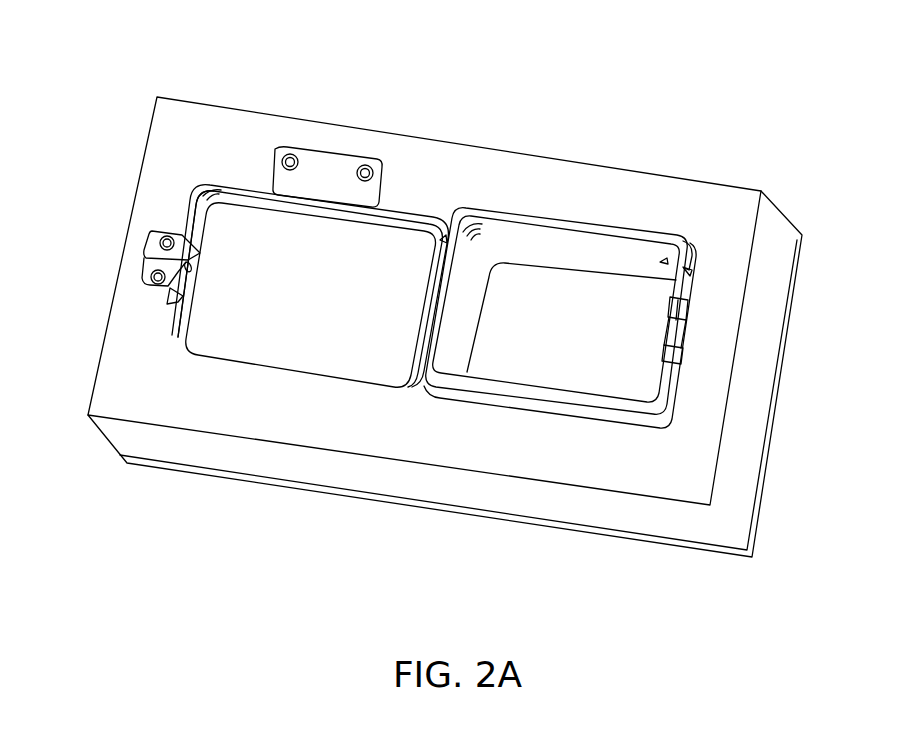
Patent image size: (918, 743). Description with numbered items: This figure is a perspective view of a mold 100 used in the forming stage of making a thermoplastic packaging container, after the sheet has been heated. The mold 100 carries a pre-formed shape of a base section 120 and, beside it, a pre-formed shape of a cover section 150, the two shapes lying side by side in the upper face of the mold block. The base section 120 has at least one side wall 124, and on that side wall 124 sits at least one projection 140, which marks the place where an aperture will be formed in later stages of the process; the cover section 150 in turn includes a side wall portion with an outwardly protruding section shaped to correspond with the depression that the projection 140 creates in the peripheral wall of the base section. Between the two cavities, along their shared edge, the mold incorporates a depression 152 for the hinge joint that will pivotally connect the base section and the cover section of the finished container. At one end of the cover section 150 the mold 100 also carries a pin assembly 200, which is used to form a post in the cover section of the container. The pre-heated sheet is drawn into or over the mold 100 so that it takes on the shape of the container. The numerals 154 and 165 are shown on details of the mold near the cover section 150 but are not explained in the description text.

The mold 100 is at (184, 53).
The base section 120 is at (518, 367).
The side wall 124 is at (687, 277).
The projection 140 is at (678, 323).
The cover section 150 is at (257, 345).
The depression 152 is at (442, 230).
The lid rim 154 is at (185, 214).
The mounting plate 165 is at (188, 256).
The pin assembly 200 is at (152, 232).